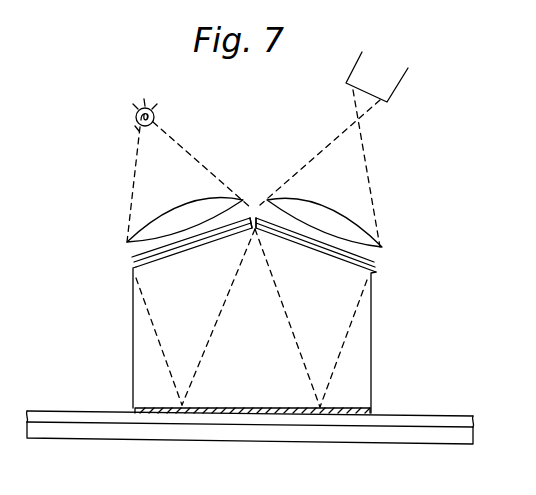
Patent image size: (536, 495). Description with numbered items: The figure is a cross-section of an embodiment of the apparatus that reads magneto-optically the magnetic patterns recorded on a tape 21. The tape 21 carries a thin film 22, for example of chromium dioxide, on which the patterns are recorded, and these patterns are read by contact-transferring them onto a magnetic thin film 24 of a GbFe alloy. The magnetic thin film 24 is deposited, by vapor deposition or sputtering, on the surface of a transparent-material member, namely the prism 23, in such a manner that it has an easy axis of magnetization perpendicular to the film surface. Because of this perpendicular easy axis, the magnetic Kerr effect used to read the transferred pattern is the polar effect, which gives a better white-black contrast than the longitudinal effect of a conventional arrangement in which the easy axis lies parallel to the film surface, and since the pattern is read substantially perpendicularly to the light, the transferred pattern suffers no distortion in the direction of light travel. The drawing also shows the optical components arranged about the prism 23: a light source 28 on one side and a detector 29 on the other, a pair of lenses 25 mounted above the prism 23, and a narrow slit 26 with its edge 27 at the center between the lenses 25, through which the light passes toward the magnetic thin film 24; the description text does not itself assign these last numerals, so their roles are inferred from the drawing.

The tape 21 is at (412, 438).
The thin film 22 is at (467, 416).
The prism 23 is at (371, 338).
The magnetic thin film 24 is at (371, 411).
The lens 25 is at (178, 218).
The slit 26 is at (252, 216).
The slit edge 27 is at (257, 216).
The light source 28 is at (150, 106).
The light detector 29 is at (377, 74).